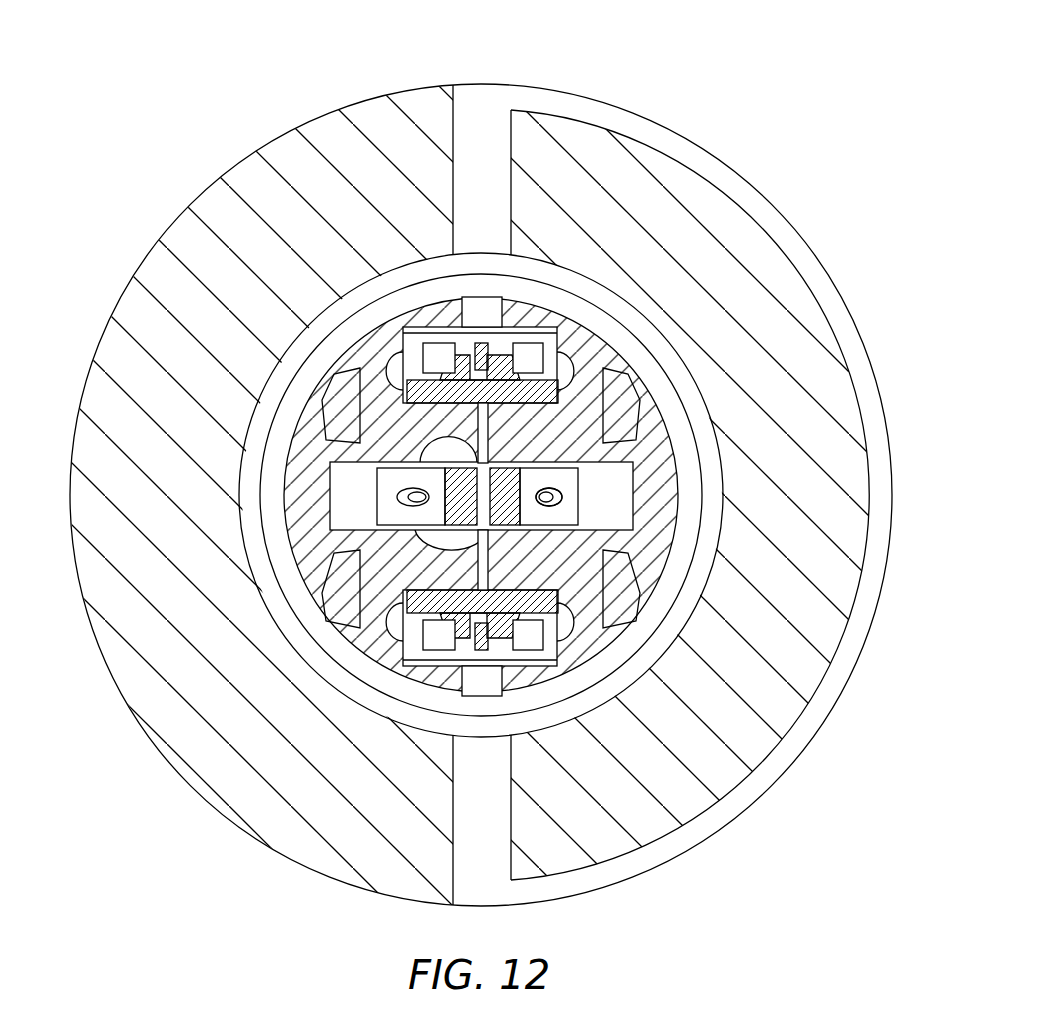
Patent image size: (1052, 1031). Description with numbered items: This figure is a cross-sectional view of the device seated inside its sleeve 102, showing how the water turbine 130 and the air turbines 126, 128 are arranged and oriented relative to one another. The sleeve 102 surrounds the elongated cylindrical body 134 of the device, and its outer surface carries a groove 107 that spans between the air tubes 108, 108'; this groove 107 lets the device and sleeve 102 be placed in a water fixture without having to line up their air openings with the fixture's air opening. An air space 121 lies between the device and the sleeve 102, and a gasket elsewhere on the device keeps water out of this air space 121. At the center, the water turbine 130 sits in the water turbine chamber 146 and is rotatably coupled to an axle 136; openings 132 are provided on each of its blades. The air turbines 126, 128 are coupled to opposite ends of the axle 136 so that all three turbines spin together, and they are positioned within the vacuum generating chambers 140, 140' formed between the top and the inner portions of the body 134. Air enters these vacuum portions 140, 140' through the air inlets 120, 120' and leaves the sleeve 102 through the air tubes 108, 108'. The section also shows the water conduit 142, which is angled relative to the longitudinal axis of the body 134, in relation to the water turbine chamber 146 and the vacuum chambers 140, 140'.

The sleeve 102 is at (860, 520).
The groove 107 is at (807, 728).
The air tube 108 is at (482, 128).
The air tube 108' is at (567, 835).
The air inlet 120 is at (545, 179).
The air inlet 120' is at (620, 786).
The air space 121 is at (707, 512).
The air turbine 126 is at (533, 633).
The air turbine 128 is at (535, 367).
The water turbine 130 is at (567, 513).
The openings 132 is at (560, 493).
The body 134 is at (312, 488).
The axle 136 is at (477, 413).
The vacuum chamber 140 is at (626, 217).
The vacuum chamber 140' is at (330, 773).
The water conduit 142 is at (437, 460).
The water turbine chamber 146 is at (365, 498).